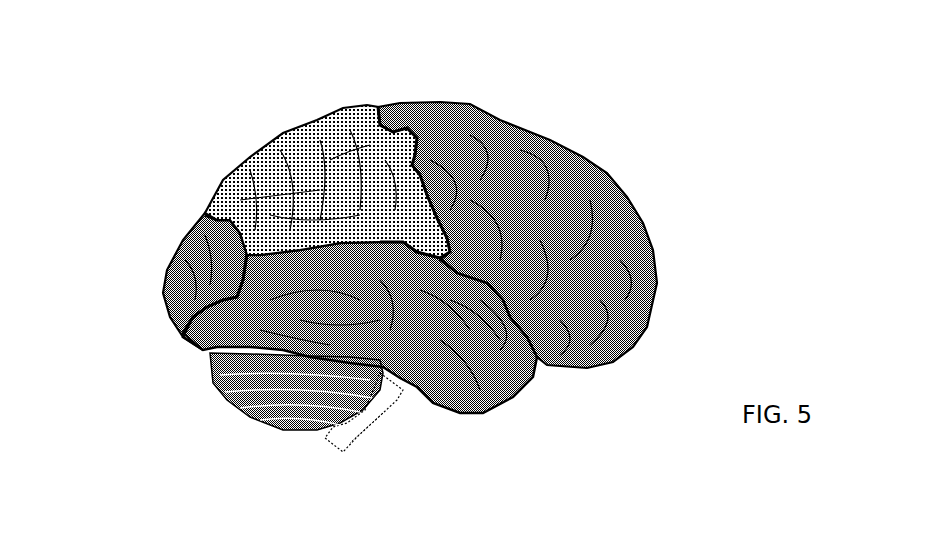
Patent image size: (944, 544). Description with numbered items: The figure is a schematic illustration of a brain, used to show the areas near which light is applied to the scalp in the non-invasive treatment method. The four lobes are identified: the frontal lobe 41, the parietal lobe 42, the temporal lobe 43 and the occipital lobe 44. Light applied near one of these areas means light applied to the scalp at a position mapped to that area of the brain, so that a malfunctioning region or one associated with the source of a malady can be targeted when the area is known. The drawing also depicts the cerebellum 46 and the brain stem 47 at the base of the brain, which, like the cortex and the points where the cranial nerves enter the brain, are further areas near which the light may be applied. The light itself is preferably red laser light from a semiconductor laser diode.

The frontal lobe 41 is at (622, 153).
The parietal lobe 42 is at (212, 135).
The temporal lobe 43 is at (548, 404).
The occipital lobe 44 is at (154, 249).
The cerebellum 46 is at (196, 397).
The brain stem 47 is at (307, 447).